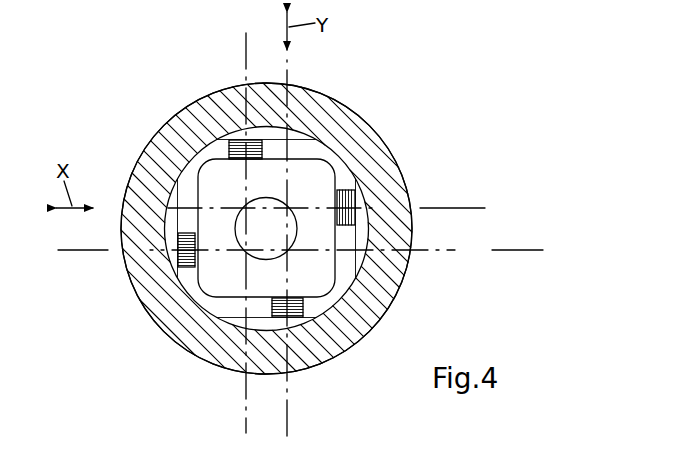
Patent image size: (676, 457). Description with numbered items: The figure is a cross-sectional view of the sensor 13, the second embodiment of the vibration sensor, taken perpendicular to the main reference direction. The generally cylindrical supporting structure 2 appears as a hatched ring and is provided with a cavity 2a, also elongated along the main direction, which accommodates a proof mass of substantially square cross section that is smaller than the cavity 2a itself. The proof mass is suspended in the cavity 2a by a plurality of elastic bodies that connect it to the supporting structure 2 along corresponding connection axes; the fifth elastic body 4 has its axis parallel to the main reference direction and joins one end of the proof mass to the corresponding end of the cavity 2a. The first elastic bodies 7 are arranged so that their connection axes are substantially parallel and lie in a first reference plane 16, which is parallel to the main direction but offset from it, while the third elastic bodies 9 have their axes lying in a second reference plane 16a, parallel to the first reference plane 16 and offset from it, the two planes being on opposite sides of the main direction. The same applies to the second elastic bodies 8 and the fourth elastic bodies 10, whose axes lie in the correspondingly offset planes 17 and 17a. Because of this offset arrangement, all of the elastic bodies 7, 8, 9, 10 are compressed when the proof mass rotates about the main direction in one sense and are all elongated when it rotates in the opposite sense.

The supporting structure 2 is at (388, 273).
The cavity 2a is at (334, 146).
The fifth elastic body 4 is at (244, 253).
The first elastic bodies 7 is at (357, 193).
The second elastic bodies 8 is at (308, 324).
The third elastic bodies 9 is at (176, 266).
The fourth elastic bodies 10 is at (224, 132).
The sensor 13 is at (399, 133).
The first reference plane 16 is at (465, 208).
The second reference plane 16a is at (532, 250).
The second reference plane 17 is at (288, 423).
The second reference plane (fourth elastic bodies) 17a is at (244, 423).